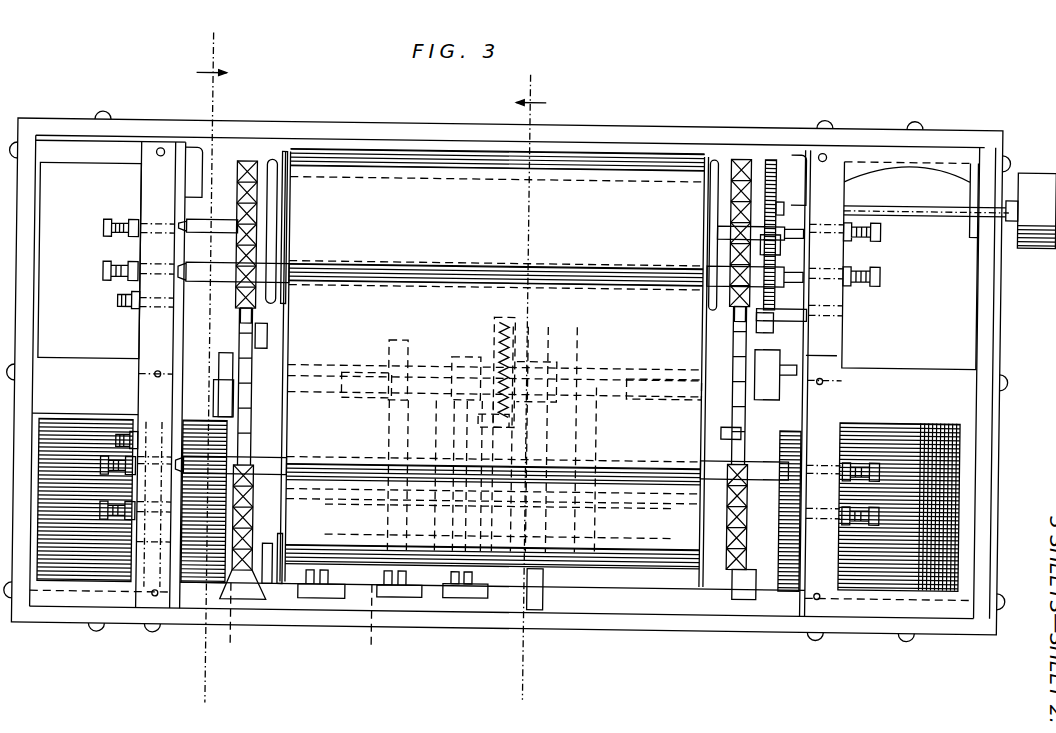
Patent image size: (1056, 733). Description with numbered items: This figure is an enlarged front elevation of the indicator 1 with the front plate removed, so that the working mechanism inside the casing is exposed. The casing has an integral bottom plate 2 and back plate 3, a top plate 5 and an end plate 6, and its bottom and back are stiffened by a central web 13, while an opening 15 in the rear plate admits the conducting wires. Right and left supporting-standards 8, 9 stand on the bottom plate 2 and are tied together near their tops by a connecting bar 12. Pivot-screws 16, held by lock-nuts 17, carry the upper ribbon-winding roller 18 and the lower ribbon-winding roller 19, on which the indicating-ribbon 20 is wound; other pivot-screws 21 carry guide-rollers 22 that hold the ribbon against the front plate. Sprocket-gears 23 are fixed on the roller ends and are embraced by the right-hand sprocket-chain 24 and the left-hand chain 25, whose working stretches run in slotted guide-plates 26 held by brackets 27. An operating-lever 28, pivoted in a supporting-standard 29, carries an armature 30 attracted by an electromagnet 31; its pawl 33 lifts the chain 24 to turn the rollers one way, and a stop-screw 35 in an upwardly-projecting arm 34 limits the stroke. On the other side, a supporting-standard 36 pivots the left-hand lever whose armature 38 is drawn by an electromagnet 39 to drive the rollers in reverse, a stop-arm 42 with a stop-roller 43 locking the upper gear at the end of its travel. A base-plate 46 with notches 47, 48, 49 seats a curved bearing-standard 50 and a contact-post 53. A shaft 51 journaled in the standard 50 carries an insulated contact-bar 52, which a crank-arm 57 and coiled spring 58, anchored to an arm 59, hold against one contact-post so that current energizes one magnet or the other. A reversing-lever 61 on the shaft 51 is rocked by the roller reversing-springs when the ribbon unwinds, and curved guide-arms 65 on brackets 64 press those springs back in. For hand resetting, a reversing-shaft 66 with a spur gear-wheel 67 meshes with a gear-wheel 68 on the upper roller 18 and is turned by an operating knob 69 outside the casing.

The indicator 1 is at (30, 205).
The bottom plate 2 is at (350, 622).
The back plate 3 is at (910, 266).
The top plate 5 is at (672, 125).
The end plate 6 is at (998, 470).
The right supporting-standard 8 is at (508, 362).
The left supporting-standard 9 is at (347, 386).
The connecting bar 12 is at (405, 145).
The web 13 is at (545, 603).
The opening 15 is at (306, 627).
The pivot-screw 16 is at (105, 226).
The lock-nut 17 is at (132, 218).
The upper ribbon-winding roller 18 is at (581, 182).
The lower ribbon-winding roller 19 is at (592, 505).
The indicating-ribbon 20 is at (497, 219).
The pivot-screw 21 is at (105, 268).
The guide-roller 22 is at (296, 262).
The sprocket-gear 23 is at (247, 158).
The sprocket-chain 24 is at (735, 338).
The chain 25 is at (288, 336).
The guide-plate 26 is at (300, 313).
The bracket 27 is at (809, 303).
The operating-lever 28 is at (809, 345).
The supporting-standard 29 is at (760, 580).
The armature 30 is at (632, 371).
The electromagnet 31 is at (940, 537).
The pawl 33 is at (732, 421).
The upwardly-projecting arm 34 is at (770, 346).
The stop-screw 35 is at (758, 312).
The supporting-standard 36 is at (260, 598).
The armature 38 is at (125, 388).
The electromagnet 39 is at (68, 425).
The stop-arm 42 is at (228, 398).
The stop-roller 43 is at (250, 416).
The base-plate 46 is at (455, 606).
The notch 47 is at (483, 596).
The notch 48 is at (415, 596).
The notch 49 is at (322, 596).
The bearing-standard 50 is at (486, 524).
The shaft 51 is at (356, 368).
The contact-bar 52 is at (406, 343).
The contact-post 53 is at (355, 455).
The crank-arm 57 is at (500, 330).
The coiled spring 58 is at (532, 372).
The arm 59 is at (502, 433).
The reversing-lever 61 is at (290, 352).
The bracket 64 is at (120, 299).
The guide-arm 65 is at (272, 156).
The reversing-shaft 66 is at (920, 198).
The spur gear-wheel 67 is at (772, 150).
The gear-wheel 68 is at (782, 252).
The operating knob 69 is at (1033, 236).